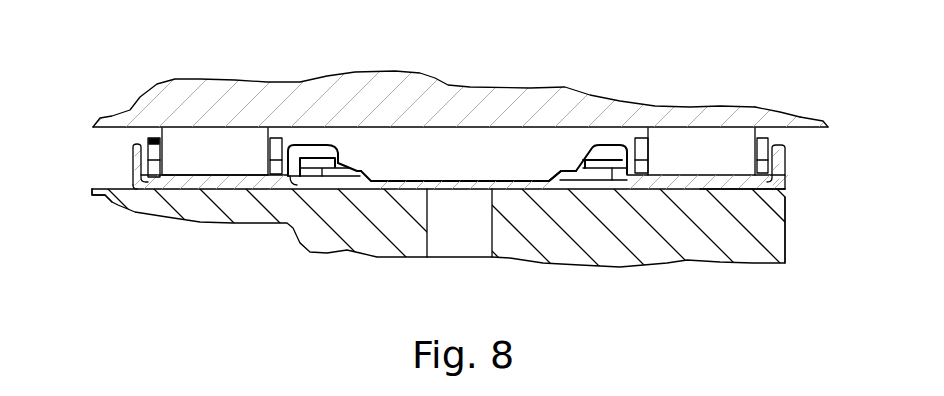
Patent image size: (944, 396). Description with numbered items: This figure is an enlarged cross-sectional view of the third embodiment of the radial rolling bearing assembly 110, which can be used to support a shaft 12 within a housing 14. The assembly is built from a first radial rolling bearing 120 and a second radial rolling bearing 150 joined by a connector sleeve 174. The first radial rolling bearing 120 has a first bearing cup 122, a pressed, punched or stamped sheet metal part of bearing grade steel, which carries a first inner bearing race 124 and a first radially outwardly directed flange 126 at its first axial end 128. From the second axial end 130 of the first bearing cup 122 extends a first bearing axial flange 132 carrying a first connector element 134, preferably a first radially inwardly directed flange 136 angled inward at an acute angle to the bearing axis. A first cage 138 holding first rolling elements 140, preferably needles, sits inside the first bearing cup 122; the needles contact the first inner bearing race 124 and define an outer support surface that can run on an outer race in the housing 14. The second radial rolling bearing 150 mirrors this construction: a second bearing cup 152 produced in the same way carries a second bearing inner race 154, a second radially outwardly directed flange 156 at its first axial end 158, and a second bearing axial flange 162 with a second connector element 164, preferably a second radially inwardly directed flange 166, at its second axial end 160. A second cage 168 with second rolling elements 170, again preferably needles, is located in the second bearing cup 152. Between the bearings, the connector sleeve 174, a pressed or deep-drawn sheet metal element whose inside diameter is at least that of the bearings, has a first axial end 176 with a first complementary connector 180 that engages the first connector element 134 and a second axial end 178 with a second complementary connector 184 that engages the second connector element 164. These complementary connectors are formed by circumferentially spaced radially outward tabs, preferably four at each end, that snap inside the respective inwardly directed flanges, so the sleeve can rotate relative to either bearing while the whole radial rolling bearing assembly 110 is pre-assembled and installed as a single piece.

The shaft 12 is at (775, 243).
The housing 14 is at (808, 123).
The radial rolling bearing assembly 110 is at (805, 118).
The first radial rolling bearing 120 is at (170, 189).
The first bearing cup 122 is at (220, 180).
The first inner bearing race 124 is at (200, 175).
The first radially outwardly directed flange 126 is at (132, 152).
The first axial end 128 is at (112, 200).
The second axial end 130 is at (342, 162).
The first bearing axial flange 132 is at (307, 146).
The first connector element 134 is at (328, 157).
The first radially inwardly directed flange 136 is at (339, 170).
The first cage 138 is at (157, 145).
The first rolling elements 140 is at (222, 147).
The second radial rolling bearing 150 is at (769, 188).
The second bearing cup 152 is at (733, 190).
The second bearing inner race 154 is at (738, 138).
The second radially outwardly directed flange 156 is at (783, 153).
The first axial end 158 is at (787, 193).
The second axial end 160 is at (578, 163).
The second bearing axial flange 162 is at (638, 145).
The second connector element 164 is at (590, 158).
The second radially inwardly directed flange 166 is at (555, 178).
The second cage 168 is at (700, 173).
The second rolling elements 170 is at (785, 119).
The connector sleeve 174 is at (428, 180).
The first axial end 176 is at (288, 181).
The second axial end 178 is at (628, 175).
The first complementary connector 180 is at (315, 172).
The second complementary connector 184 is at (598, 172).